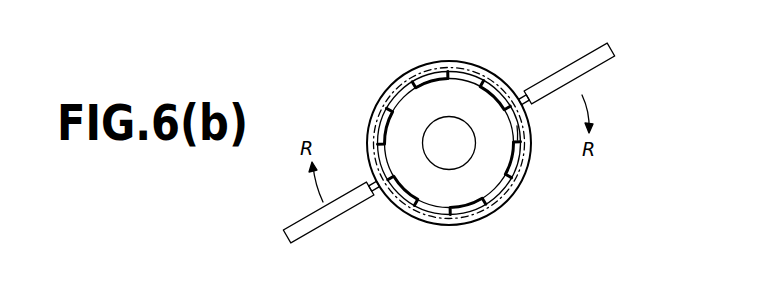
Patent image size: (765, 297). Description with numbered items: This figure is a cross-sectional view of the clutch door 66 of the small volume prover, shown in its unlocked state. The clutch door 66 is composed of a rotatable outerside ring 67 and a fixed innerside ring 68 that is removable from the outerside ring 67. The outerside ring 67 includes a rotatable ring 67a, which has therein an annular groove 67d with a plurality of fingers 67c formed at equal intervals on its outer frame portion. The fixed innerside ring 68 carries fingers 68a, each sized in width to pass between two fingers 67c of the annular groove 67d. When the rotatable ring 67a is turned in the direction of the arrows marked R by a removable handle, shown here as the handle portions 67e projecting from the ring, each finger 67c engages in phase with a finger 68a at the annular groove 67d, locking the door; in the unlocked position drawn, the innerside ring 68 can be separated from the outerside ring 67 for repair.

The clutch door 66 is at (480, 53).
The movable outerside ring 67 is at (480, 221).
The rotatable ring 67a is at (503, 82).
The finger 67c is at (511, 121).
The annular groove 67d is at (519, 135).
The handle 67e is at (602, 58).
The fixed innerside ring 68 is at (480, 175).
The finger 68a is at (514, 161).